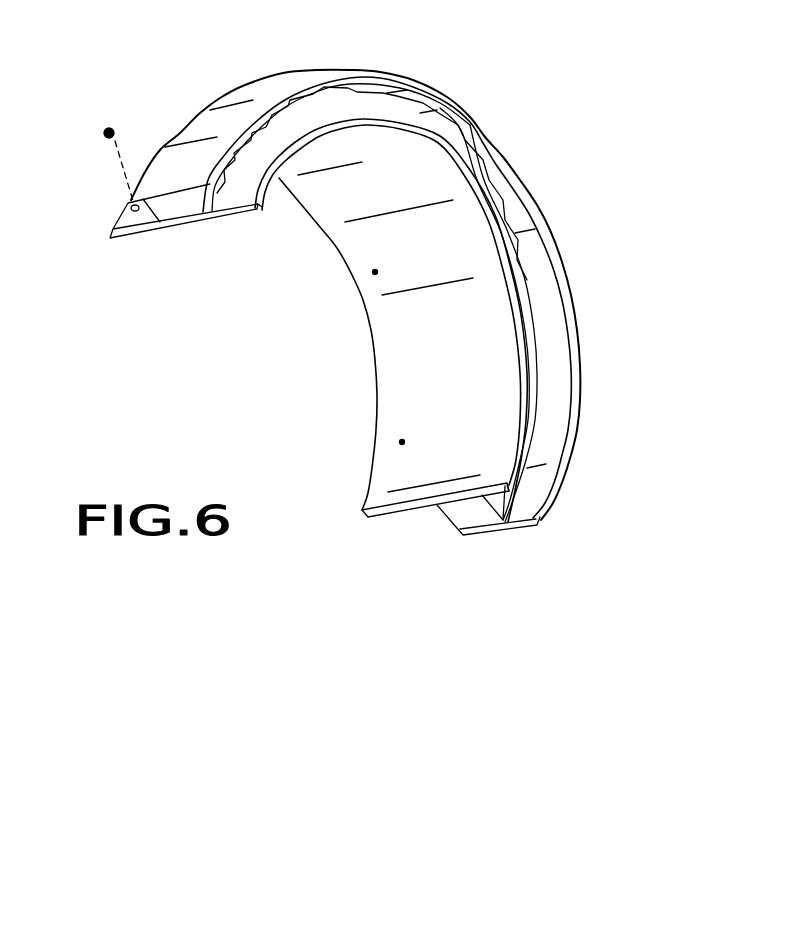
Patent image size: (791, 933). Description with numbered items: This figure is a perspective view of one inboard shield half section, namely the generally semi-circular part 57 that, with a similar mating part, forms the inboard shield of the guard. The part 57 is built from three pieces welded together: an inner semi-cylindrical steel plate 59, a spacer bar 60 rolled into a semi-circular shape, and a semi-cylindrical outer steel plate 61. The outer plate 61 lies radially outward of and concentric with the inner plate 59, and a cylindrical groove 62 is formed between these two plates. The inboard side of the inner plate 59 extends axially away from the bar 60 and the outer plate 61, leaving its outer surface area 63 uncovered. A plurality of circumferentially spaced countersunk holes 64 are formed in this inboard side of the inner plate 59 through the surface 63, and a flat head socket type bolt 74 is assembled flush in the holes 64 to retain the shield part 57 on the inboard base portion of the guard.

The semi-circular part 57 is at (530, 172).
The inner semi-cylindrical steel plate 59 is at (398, 514).
The spacer bar 60 is at (478, 517).
The semi-cylindrical outer steel plate 61 is at (248, 100).
The cylindrical groove 62 is at (497, 503).
The outer surface area 63 is at (116, 223).
The countersunk holes 64 is at (133, 205).
The flat head socket type bolt 74 is at (118, 130).